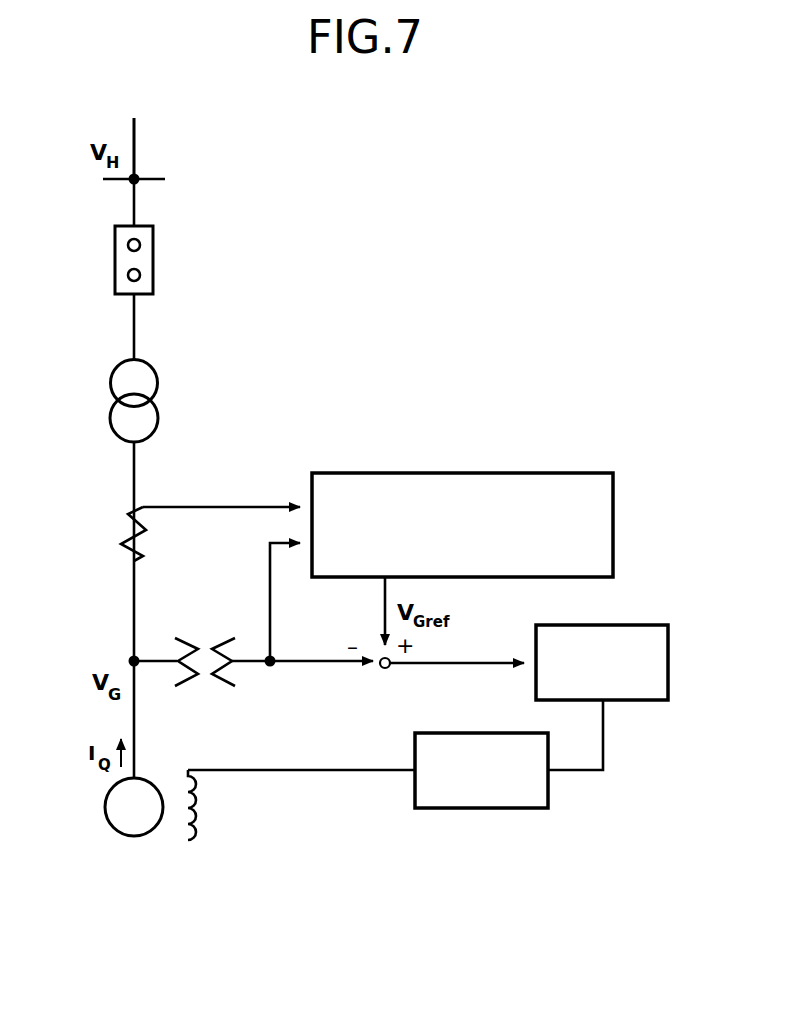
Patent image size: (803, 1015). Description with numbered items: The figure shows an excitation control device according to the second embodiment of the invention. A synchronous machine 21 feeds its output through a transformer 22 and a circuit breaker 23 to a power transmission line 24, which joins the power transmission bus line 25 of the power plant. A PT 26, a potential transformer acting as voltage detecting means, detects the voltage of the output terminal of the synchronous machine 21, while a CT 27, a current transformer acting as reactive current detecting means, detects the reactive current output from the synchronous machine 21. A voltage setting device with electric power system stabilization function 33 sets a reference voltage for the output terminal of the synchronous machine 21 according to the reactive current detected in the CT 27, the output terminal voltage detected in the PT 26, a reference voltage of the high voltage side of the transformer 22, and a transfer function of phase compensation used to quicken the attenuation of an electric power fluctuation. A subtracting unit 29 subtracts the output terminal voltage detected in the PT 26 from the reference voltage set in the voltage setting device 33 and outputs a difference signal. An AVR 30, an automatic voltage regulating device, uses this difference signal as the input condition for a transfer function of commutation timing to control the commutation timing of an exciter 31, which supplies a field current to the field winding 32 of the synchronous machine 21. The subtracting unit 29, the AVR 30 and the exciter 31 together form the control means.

The synchronous machine 21 is at (112, 828).
The transformer 22 is at (162, 386).
The circuit breaker 23 is at (154, 252).
The power transmission line 24 is at (138, 155).
The power transmission bus line 25 is at (112, 181).
The PT (potential transformer) 26 is at (223, 686).
The CT (current transformer) 27 is at (122, 548).
The subtracting unit 29 is at (384, 669).
The AVR (automatic voltage regulating device) 30 is at (640, 625).
The exciter 31 is at (473, 733).
The field winding 32 is at (200, 830).
The voltage setting device with electric power system stabilization function 33 is at (486, 473).